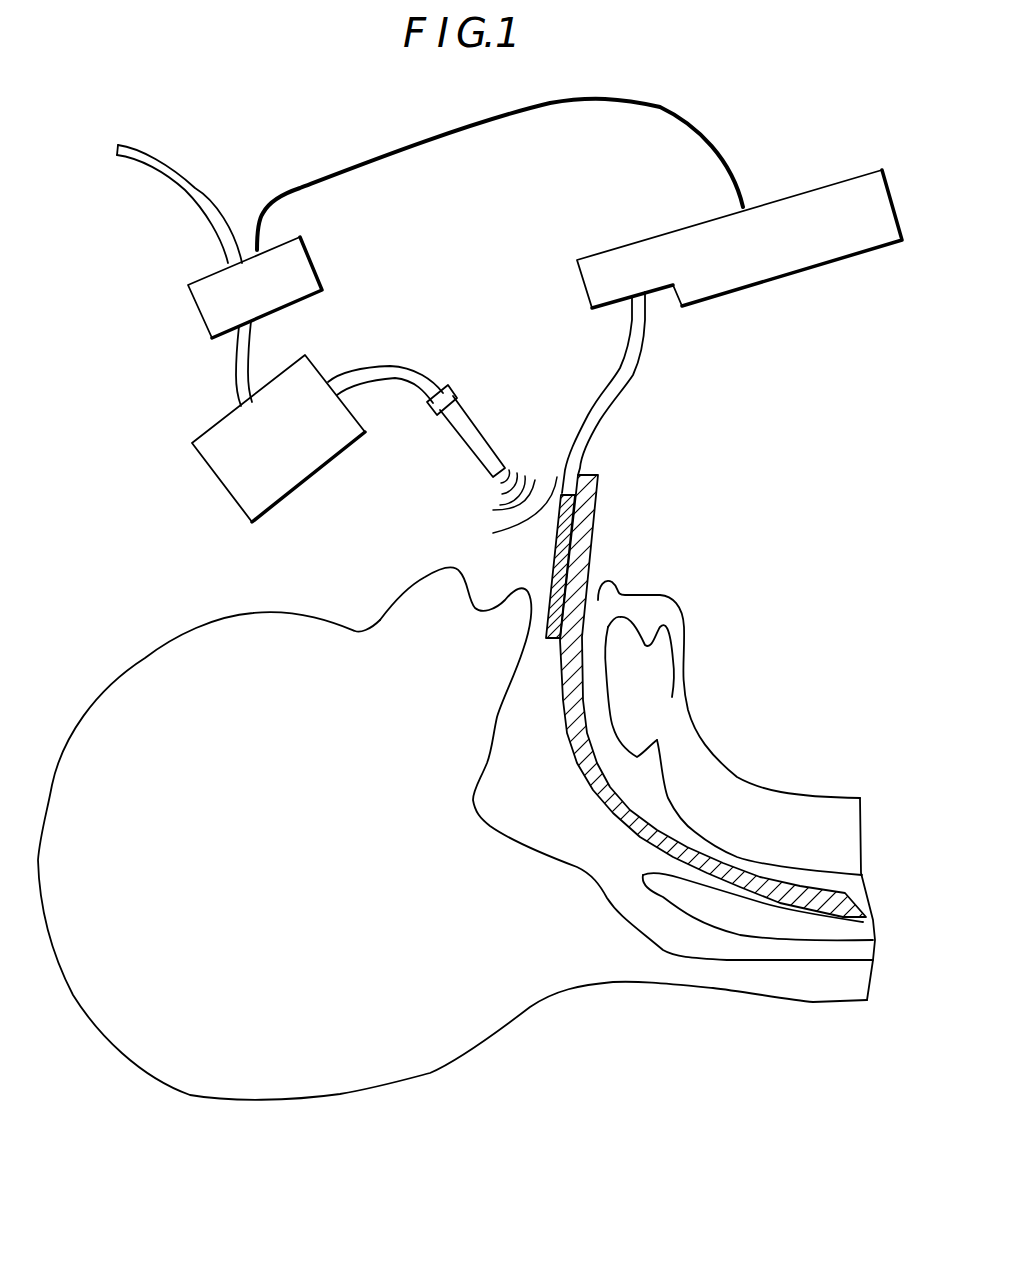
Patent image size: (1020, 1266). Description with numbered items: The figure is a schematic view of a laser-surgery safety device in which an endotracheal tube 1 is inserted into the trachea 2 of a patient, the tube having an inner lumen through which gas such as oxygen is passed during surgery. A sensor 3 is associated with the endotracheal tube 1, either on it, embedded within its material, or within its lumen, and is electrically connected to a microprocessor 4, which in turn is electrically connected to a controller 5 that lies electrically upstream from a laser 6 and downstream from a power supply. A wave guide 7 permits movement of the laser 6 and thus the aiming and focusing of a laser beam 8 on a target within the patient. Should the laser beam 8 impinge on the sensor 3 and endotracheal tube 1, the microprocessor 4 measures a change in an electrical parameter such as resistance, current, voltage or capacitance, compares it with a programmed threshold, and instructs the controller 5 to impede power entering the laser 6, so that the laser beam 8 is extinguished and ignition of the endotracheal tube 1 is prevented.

The endotracheal tube 1 is at (596, 526).
The trachea 2 is at (737, 860).
The sensor 3 is at (550, 547).
The microprocessor 4 is at (668, 233).
The controller 5 is at (198, 311).
The laser 6 is at (220, 480).
The wave guide 7 is at (470, 448).
The laser beam 8 is at (500, 508).